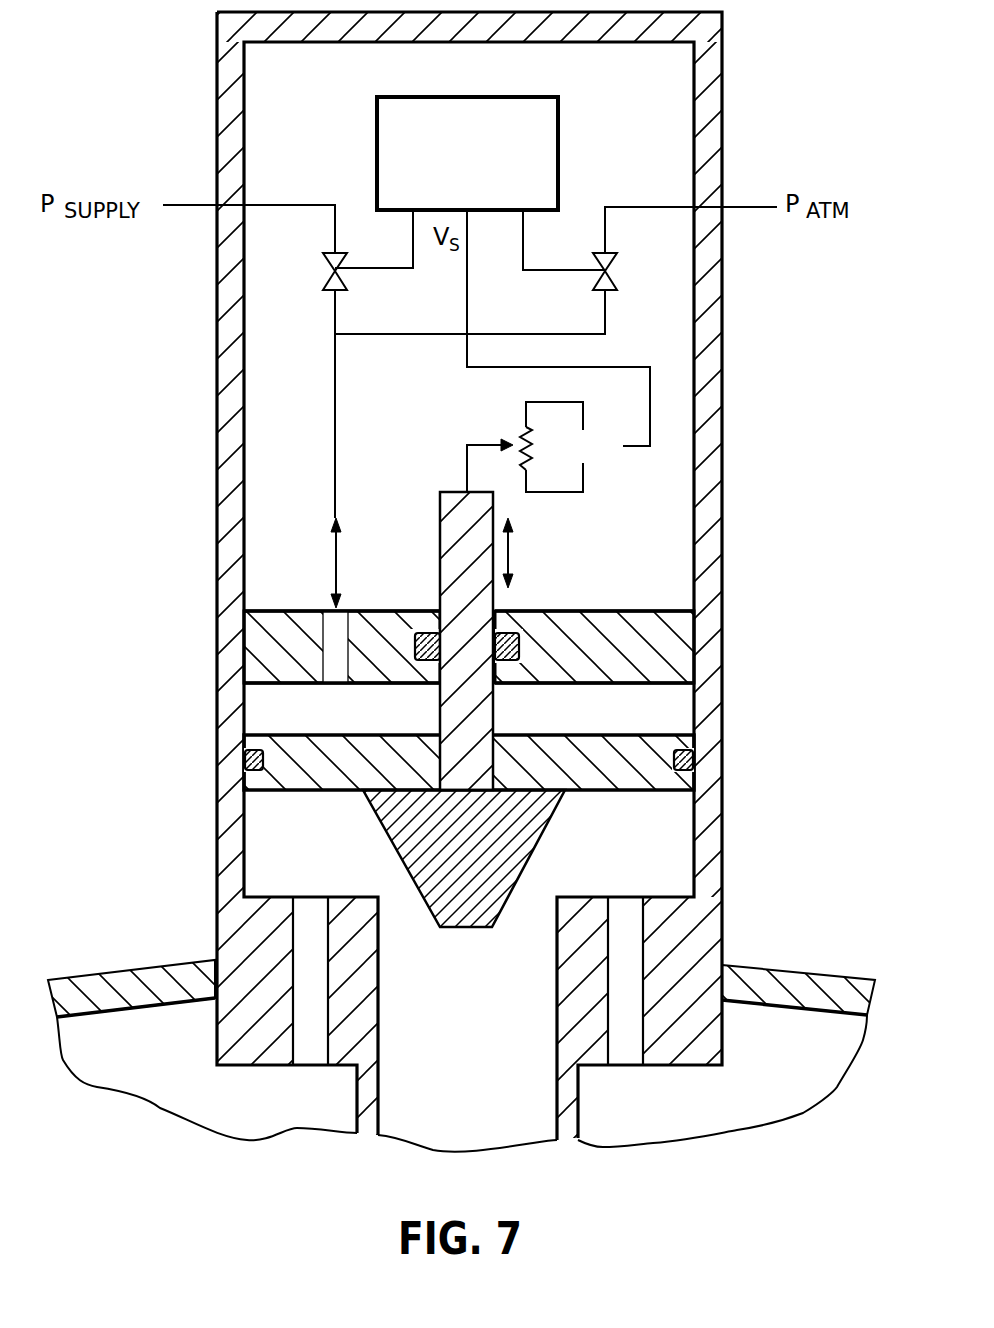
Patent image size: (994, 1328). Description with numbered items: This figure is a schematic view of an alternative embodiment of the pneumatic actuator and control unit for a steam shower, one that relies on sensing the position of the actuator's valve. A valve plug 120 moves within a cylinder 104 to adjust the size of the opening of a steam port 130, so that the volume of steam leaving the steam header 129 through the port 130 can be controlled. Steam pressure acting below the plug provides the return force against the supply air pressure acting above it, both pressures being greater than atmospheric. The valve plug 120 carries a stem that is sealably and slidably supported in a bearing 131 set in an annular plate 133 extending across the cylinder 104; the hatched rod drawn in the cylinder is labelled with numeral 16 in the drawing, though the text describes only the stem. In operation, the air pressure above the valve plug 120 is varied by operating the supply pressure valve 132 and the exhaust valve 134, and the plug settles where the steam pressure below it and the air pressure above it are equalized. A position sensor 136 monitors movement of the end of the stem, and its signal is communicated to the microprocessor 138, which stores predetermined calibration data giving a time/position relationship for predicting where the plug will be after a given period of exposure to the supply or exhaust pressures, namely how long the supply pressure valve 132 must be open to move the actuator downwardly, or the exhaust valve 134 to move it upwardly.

The cylinder 104 is at (223, 483).
The microprocessor 138 is at (377, 137).
The supply pressure valve 132 is at (323, 263).
The exhaust valve 134 is at (615, 258).
The position sensor 136 is at (573, 477).
The plunger 16 is at (441, 517).
The annular plate 133 is at (657, 628).
The bearing 131 is at (502, 662).
The valve plug 120 is at (643, 757).
The steam header 129 is at (787, 967).
The steam port 130 is at (505, 1068).